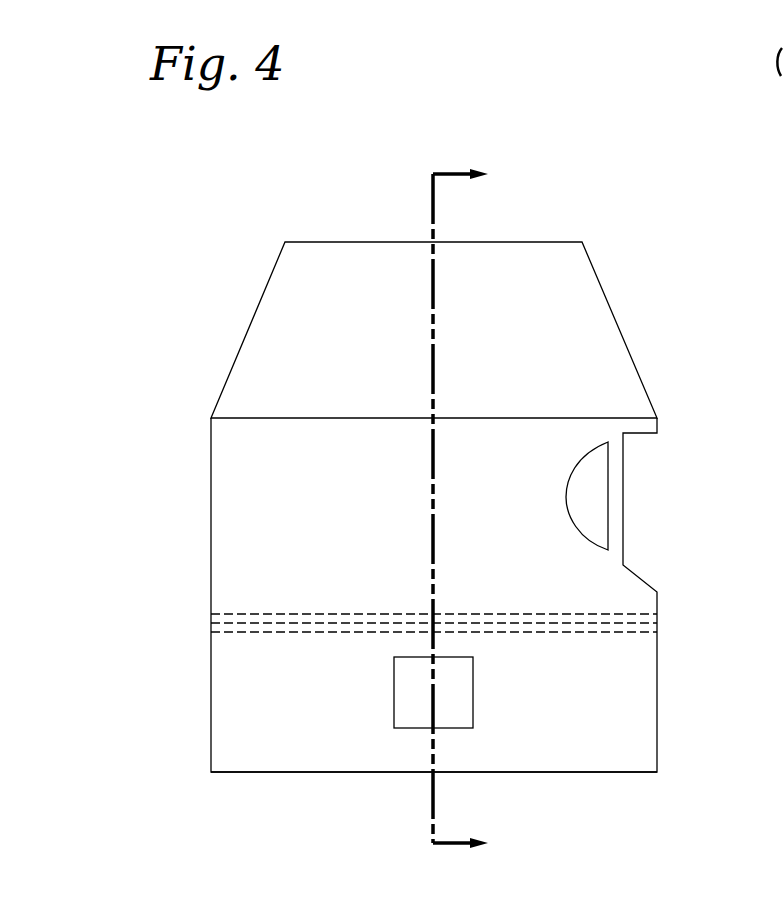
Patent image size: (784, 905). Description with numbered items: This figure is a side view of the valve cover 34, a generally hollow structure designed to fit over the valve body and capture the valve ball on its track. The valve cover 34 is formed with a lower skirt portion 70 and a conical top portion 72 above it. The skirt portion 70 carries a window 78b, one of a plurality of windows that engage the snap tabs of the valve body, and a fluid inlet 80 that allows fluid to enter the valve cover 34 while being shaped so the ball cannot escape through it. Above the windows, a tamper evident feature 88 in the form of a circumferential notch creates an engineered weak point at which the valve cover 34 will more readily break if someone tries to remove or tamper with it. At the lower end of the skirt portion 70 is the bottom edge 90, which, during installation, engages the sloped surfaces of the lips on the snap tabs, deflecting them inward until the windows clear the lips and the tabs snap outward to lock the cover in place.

The valve cover 34 is at (454, 511).
The lower skirt portion 70 is at (247, 652).
The conical top portion 72 is at (283, 330).
The window 78b is at (415, 715).
The fluid inlet 80 is at (638, 478).
The tamper evident feature 88 is at (628, 625).
The bottom edge 90 is at (243, 773).